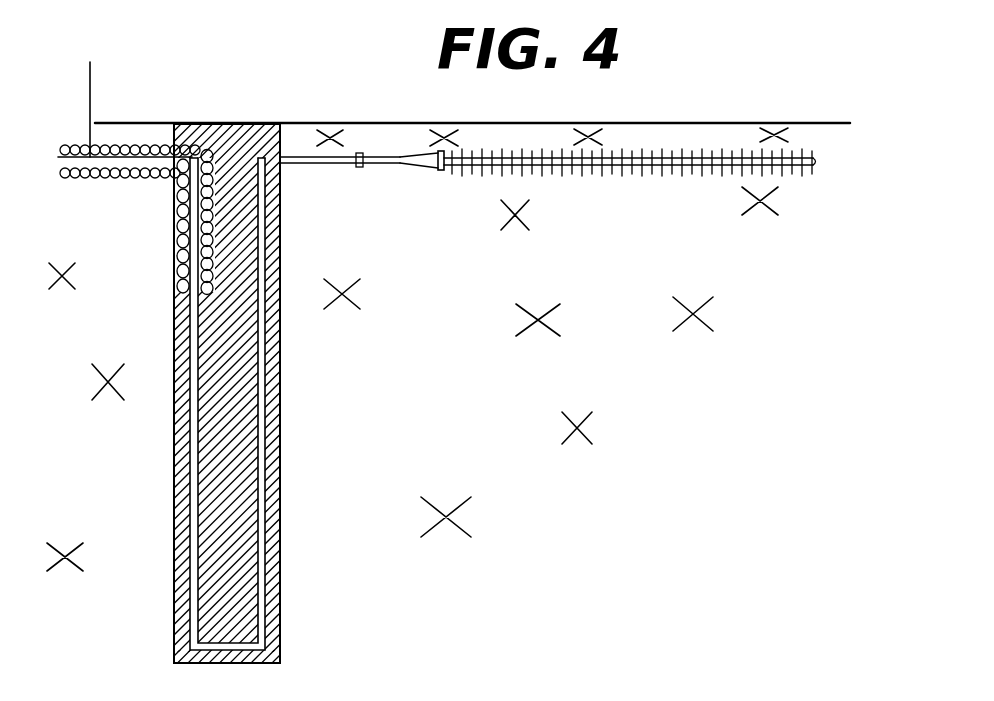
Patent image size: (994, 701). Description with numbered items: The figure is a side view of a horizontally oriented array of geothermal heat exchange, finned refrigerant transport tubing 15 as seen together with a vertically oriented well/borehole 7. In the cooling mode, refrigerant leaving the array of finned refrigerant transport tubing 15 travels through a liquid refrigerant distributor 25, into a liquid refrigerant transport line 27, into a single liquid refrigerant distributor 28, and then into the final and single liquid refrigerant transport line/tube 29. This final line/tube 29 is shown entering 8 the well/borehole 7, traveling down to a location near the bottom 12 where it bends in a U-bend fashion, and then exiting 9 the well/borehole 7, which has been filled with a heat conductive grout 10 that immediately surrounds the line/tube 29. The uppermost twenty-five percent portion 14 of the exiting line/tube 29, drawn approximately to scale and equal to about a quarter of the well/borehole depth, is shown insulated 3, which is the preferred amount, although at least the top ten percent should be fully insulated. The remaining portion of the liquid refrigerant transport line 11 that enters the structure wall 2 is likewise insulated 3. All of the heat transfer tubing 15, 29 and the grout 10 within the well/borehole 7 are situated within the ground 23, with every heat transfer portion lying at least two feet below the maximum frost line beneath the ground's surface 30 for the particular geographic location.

The structure wall 2 is at (88, 90).
The insulation 3 is at (113, 143).
The well/borehole 7 is at (172, 515).
The entering point 8 is at (273, 165).
The exiting point 9 is at (187, 145).
The heat conductive grout 10 is at (220, 411).
The liquid refrigerant transport line 11 is at (130, 162).
The bottom 12 is at (168, 660).
The uppermost 25% portion 14 is at (212, 286).
The finned refrigerant transport tubing 15 is at (625, 167).
The ground 23 is at (593, 422).
The liquid refrigerant distributor 25 is at (433, 172).
The liquid refrigerant transport line 27 is at (399, 164).
The single liquid refrigerant distributor 28 is at (360, 167).
The final and single liquid refrigerant transport line/tube 29 is at (310, 164).
The ground's surface 30 is at (690, 123).